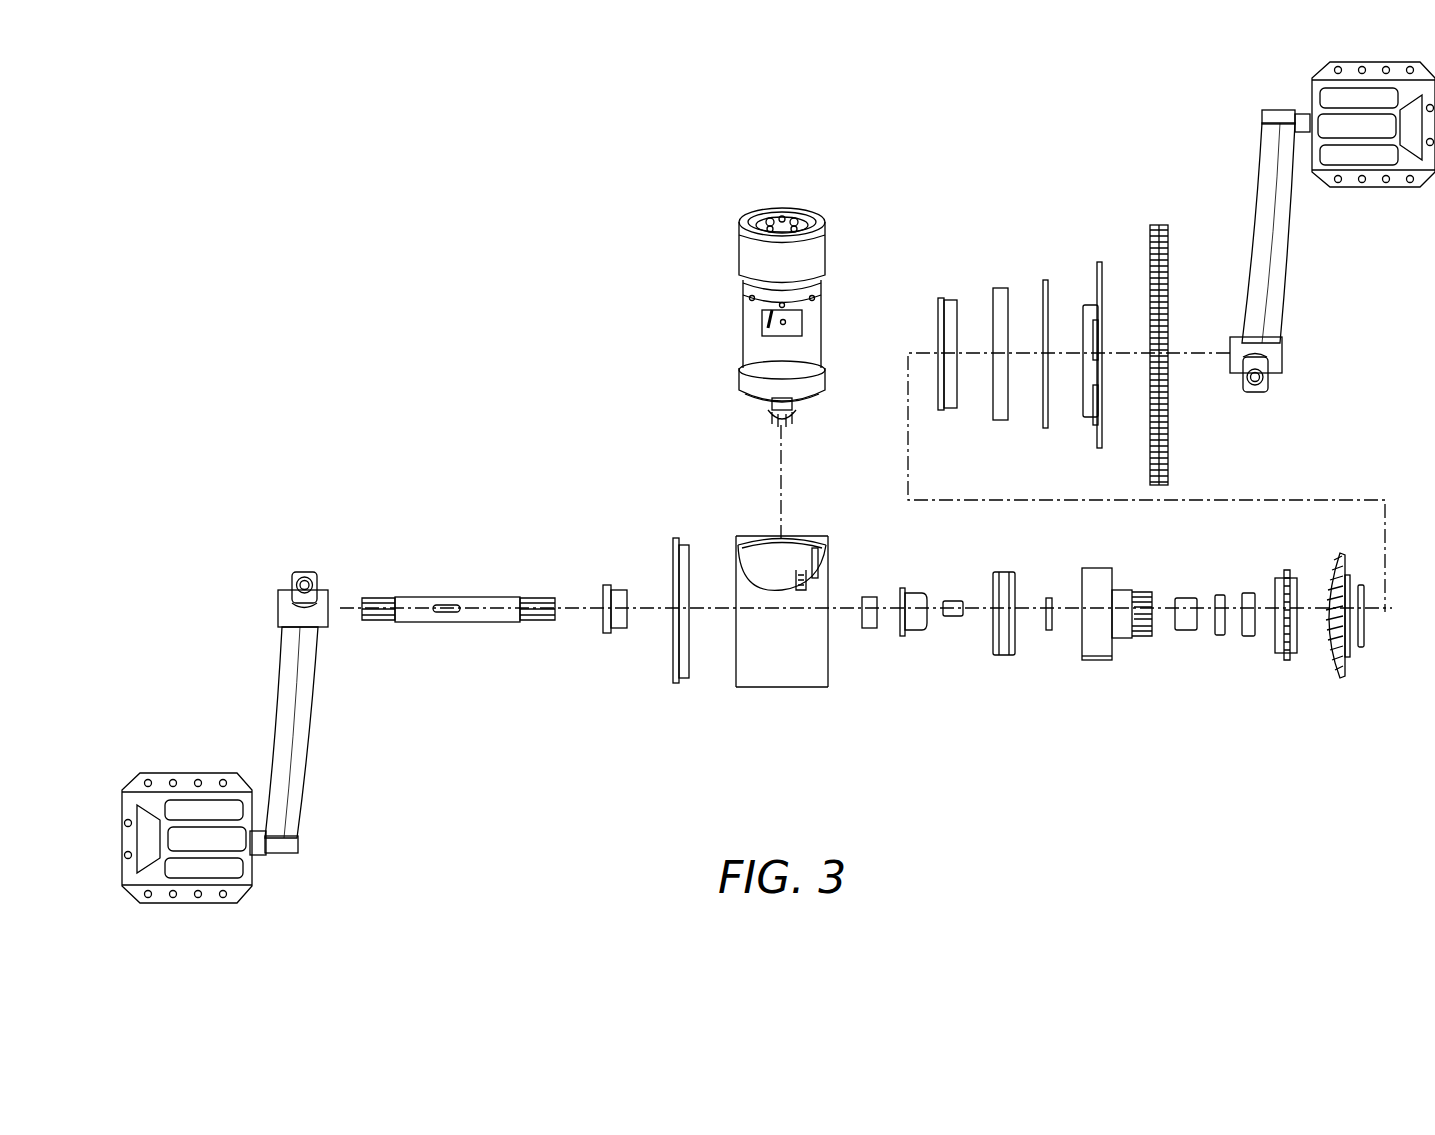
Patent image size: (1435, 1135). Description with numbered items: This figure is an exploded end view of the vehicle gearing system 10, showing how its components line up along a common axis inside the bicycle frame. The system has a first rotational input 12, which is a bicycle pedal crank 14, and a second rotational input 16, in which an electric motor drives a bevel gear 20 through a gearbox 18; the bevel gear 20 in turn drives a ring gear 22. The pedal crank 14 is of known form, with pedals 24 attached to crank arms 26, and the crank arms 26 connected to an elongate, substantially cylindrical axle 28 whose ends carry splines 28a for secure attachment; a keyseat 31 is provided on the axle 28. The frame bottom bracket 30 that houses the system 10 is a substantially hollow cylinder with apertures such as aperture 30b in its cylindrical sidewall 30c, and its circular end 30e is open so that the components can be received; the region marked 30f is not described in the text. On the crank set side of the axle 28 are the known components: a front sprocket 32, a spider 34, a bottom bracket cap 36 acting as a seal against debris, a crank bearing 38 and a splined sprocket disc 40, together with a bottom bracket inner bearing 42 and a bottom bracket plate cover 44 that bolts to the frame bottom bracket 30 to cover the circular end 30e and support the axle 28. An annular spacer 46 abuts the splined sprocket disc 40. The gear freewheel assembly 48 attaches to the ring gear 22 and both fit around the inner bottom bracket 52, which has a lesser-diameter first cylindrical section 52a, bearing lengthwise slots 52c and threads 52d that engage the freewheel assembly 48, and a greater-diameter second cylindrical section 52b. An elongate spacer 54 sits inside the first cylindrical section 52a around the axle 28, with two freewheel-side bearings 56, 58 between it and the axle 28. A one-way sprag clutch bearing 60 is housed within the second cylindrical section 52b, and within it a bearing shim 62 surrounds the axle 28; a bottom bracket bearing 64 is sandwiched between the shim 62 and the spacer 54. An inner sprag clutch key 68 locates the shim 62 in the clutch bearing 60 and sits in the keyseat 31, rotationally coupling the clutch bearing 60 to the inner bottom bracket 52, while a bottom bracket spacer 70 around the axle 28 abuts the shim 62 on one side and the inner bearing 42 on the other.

The vehicle gearing system 10 is at (588, 365).
The first rotational input 12 is at (298, 808).
The bicycle pedal crank 14 is at (303, 750).
The second rotational input 16 is at (812, 352).
The gearbox 18 is at (752, 352).
The bevel gear 20 is at (800, 418).
The ring gear 22 is at (1330, 556).
The pedals 24 is at (148, 775).
The crank arms 26 is at (290, 677).
The axle 28 is at (485, 622).
The splines 28a is at (378, 596).
The frame bottom bracket 30 is at (808, 688).
The aperture 30b is at (765, 545).
The cylindrical sidewall 30c is at (755, 688).
The circular end 30e is at (840, 680).
The housing side 30f is at (723, 680).
The keyseat 31 is at (445, 602).
The front sprocket 32 is at (1172, 454).
The spider 34 is at (1090, 305).
The bottom bracket cap 36 is at (1046, 280).
The crank bearing 38 is at (1000, 288).
The splined sprocket disc 40 is at (950, 298).
The bottom bracket inner bearing 42 is at (620, 634).
The bottom bracket plate cover 44 is at (686, 540).
The spacer 46 is at (1362, 648).
The gear freewheel assembly 48 is at (1288, 660).
The inner bottom bracket 52 is at (1098, 662).
The first cylindrical section 52a is at (1125, 594).
The second cylindrical section 52b is at (1092, 570).
The slots 52c is at (1152, 608).
The threads 52d is at (1127, 636).
The elongate spacer 54 is at (1187, 632).
The freewheel-side bearing 56 is at (1219, 594).
The freewheel-side bearing 58 is at (1248, 637).
The one-way sprag clutch bearing 60 is at (1006, 657).
The bearing shim 62 is at (915, 638).
The bottom bracket bearing 64 is at (1050, 632).
The inner sprag clutch key 68 is at (952, 600).
The bottom bracket spacer 70 is at (869, 596).